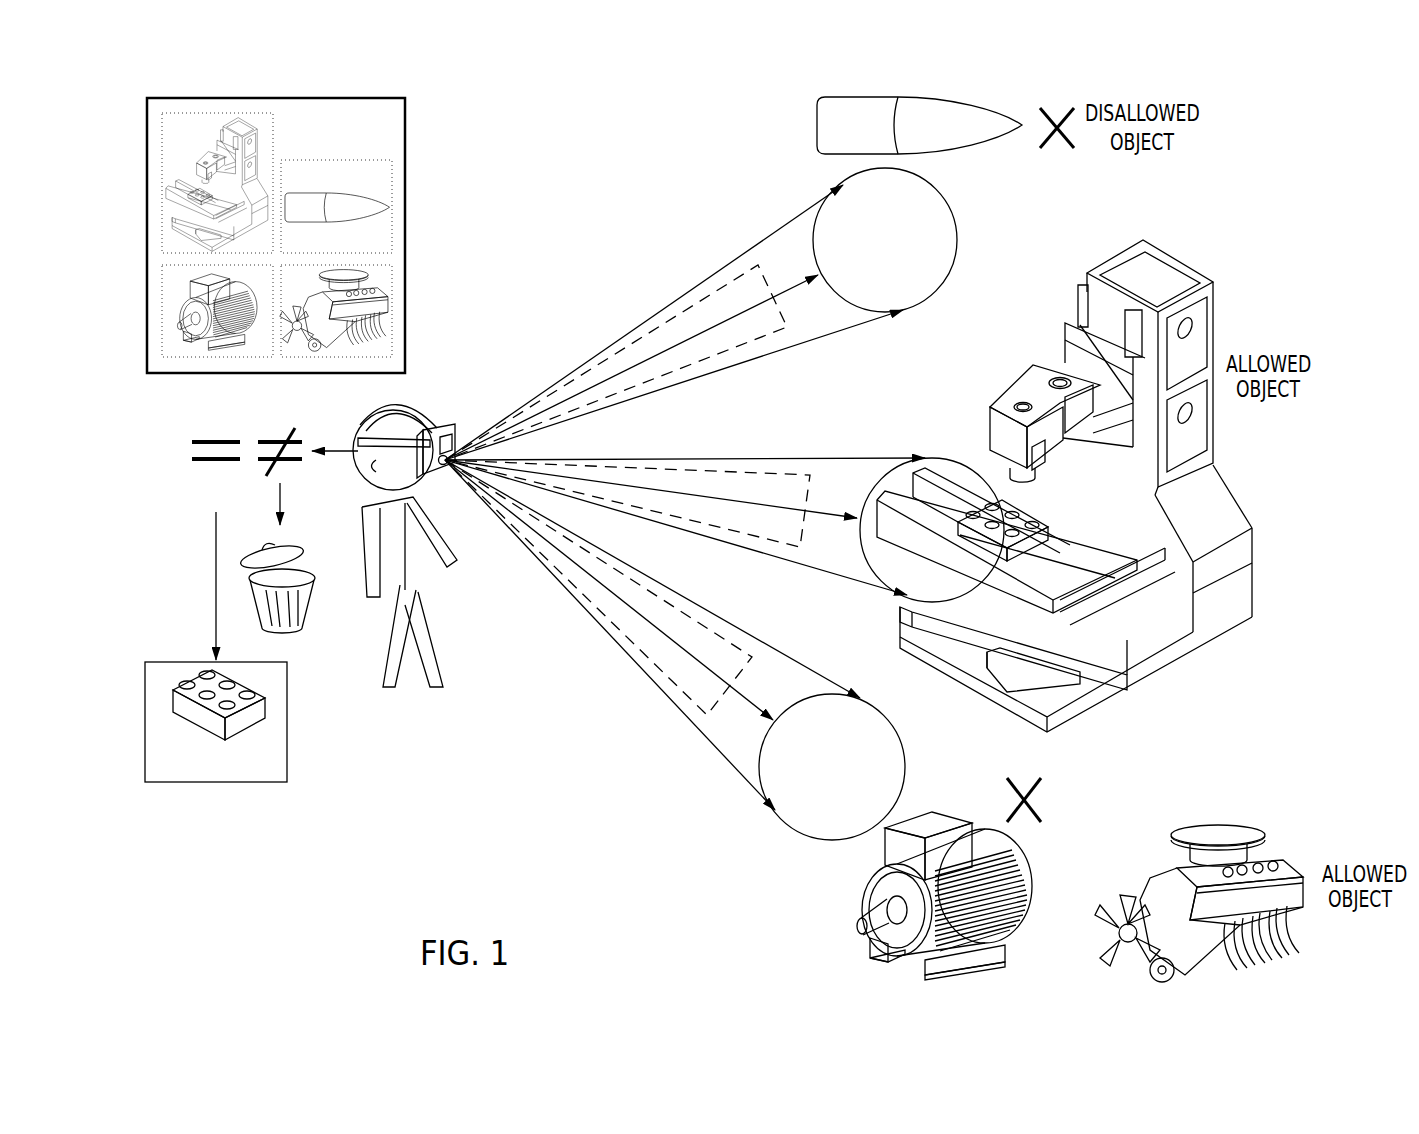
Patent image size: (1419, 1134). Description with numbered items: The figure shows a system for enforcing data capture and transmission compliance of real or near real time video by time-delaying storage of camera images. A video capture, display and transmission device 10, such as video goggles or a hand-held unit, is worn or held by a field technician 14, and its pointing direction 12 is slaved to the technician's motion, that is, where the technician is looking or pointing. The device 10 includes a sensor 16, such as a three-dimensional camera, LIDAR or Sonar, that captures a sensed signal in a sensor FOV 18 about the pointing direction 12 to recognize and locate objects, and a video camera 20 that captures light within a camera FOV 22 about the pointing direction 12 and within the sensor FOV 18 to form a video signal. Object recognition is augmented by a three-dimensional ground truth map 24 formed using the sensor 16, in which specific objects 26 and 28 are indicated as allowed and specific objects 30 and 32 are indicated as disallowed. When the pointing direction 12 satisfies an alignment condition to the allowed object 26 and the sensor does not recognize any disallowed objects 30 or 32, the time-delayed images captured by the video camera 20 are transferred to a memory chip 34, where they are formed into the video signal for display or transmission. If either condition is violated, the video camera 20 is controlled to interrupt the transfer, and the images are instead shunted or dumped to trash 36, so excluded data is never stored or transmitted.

The video capture, display and transmission device 10 is at (343, 407).
The pointing direction 12 is at (795, 283).
The field technician 14 is at (435, 608).
The sensor 16 is at (447, 422).
The sensor FOV 18 is at (813, 340).
The video camera 20 is at (443, 475).
The camera FOV 22 is at (727, 338).
The 3D ground truth map 24 is at (407, 132).
The allowed object 26 is at (1235, 497).
The allowed object 28 is at (1247, 825).
The disallowed object 30 is at (880, 97).
The disallowed object 32 is at (1027, 860).
The memory chip 34 is at (145, 722).
The trash 36 is at (298, 630).